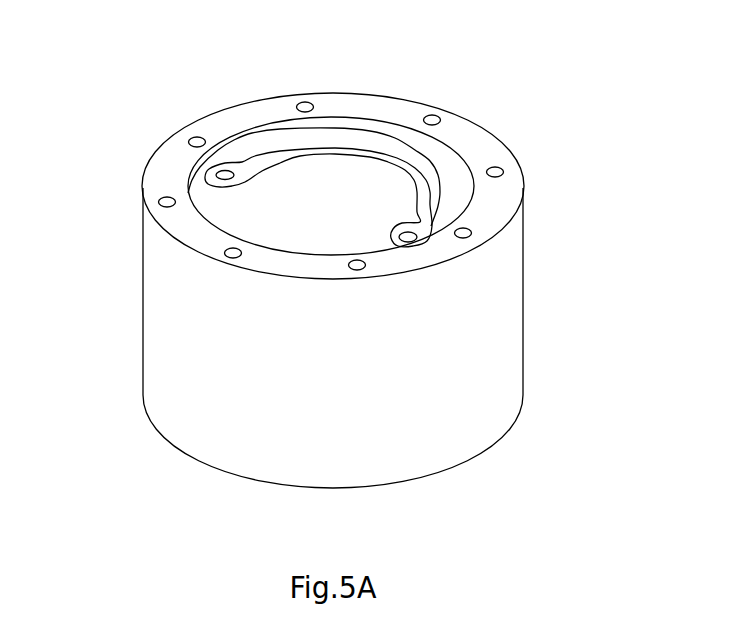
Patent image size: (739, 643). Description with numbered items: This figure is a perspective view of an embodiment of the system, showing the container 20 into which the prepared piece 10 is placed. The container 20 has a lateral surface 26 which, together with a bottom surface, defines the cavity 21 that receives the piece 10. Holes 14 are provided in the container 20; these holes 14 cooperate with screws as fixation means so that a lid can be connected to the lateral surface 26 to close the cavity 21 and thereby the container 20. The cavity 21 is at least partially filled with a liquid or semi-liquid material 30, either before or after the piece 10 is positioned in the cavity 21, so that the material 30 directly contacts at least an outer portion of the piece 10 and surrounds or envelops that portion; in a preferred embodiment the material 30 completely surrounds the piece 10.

The piece 10 is at (378, 152).
The holes 14 is at (440, 118).
The container 20 is at (578, 290).
The cavity 21 is at (312, 122).
The lateral surface 26 is at (345, 387).
The liquid or semi-liquid material 30 is at (258, 213).